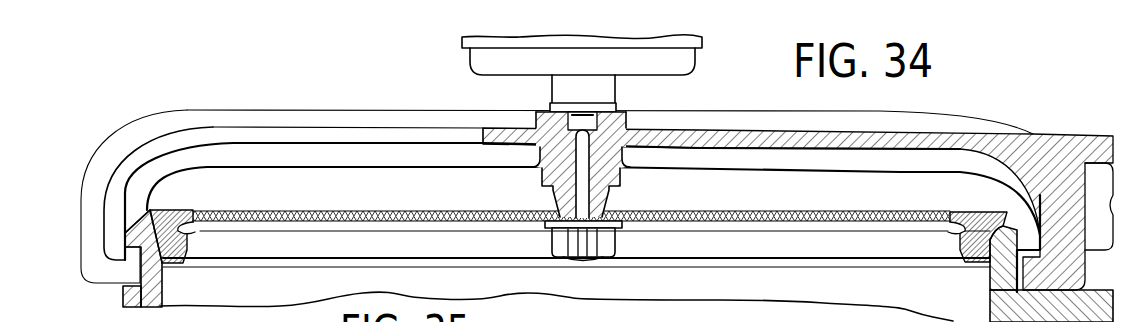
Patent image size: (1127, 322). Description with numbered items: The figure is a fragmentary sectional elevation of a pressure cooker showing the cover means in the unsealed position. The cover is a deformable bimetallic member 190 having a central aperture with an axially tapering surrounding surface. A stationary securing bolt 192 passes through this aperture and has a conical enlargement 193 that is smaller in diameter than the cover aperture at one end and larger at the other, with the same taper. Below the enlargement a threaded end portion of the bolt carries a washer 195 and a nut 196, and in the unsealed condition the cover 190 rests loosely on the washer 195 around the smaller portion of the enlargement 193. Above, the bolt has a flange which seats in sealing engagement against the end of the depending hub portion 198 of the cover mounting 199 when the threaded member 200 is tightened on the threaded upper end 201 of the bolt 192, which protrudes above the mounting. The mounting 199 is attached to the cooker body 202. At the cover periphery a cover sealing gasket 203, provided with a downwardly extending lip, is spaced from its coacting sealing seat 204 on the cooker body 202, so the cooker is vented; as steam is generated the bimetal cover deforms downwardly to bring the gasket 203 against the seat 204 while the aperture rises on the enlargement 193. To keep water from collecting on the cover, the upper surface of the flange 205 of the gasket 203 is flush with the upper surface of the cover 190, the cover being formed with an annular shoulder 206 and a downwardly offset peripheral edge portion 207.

The deformable bimetallic member 190 is at (375, 210).
The stationary securing bolt 192 is at (595, 164).
The conical enlargement 193 is at (607, 197).
The washer 195 is at (622, 227).
The nut 196 is at (613, 260).
The depending hub portion 198 is at (552, 163).
The cover mounting 199 is at (352, 117).
The threaded member 200 is at (595, 92).
The threaded upper end 201 is at (533, 112).
The cooker body 202 is at (126, 300).
The cover sealing gasket 203 is at (153, 210).
The sealing seat 204 is at (163, 263).
The flange 205 is at (173, 210).
The annular shoulder 206 is at (232, 234).
The downwardly offset peripheral edge portion 207 is at (188, 233).